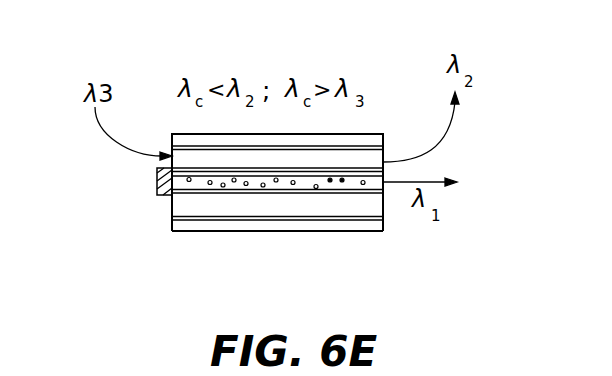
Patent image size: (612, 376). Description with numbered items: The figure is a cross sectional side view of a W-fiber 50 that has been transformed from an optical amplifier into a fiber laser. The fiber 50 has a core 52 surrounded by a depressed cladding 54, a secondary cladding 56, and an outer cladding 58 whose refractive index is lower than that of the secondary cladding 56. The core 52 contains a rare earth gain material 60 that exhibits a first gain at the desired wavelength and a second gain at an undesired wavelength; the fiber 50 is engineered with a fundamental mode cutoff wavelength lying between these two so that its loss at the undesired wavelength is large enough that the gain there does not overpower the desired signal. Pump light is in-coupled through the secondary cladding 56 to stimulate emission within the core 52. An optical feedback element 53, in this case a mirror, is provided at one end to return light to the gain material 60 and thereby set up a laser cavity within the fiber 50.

The W-fiber 50 is at (151, 59).
The core 52 is at (203, 190).
The optical feedback element 53 is at (157, 172).
The depressed cladding 54 is at (348, 172).
The secondary cladding 56 is at (178, 205).
The outer cladding 58 is at (375, 227).
The rare earth gain material 60 is at (279, 183).